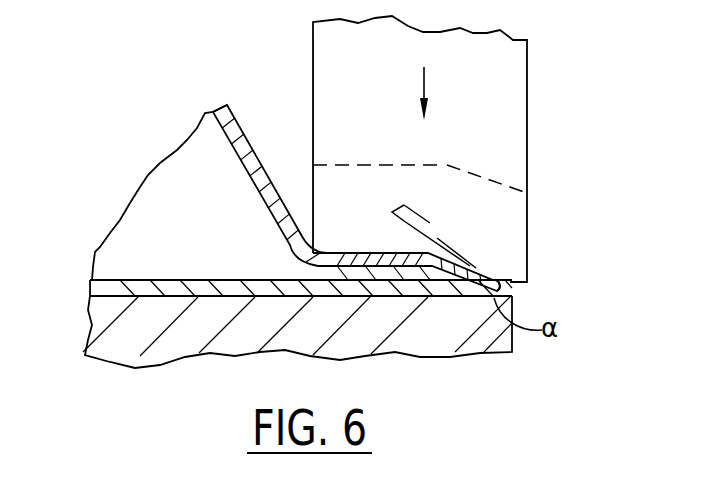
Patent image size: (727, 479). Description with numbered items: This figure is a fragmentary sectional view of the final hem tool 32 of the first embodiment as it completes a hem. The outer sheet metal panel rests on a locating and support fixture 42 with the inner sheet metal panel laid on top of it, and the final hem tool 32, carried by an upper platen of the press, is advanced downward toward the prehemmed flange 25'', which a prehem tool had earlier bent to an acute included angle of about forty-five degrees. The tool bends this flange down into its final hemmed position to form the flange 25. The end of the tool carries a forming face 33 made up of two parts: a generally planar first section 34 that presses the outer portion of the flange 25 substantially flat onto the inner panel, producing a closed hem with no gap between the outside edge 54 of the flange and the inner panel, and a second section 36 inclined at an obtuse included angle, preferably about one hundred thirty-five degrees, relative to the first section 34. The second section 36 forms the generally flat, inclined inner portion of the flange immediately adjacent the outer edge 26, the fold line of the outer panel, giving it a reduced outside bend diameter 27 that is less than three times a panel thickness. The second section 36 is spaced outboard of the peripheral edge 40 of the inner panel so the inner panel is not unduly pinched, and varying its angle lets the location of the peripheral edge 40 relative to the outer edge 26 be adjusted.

The final hem tool 32 is at (530, 78).
The flange 25 is at (356, 198).
The prehemmed flange 25'' is at (452, 231).
The outside edge of the flange 54 is at (370, 260).
The first section of the forming face 34 is at (348, 258).
The forming face 33 is at (357, 265).
The second section of the forming face 36 is at (500, 270).
The outer edge 26 is at (522, 274).
The outside bend diameter 27 is at (518, 296).
The peripheral edge of the inner sheet metal panel 40 is at (435, 280).
The locating and support fixture 42 is at (494, 352).